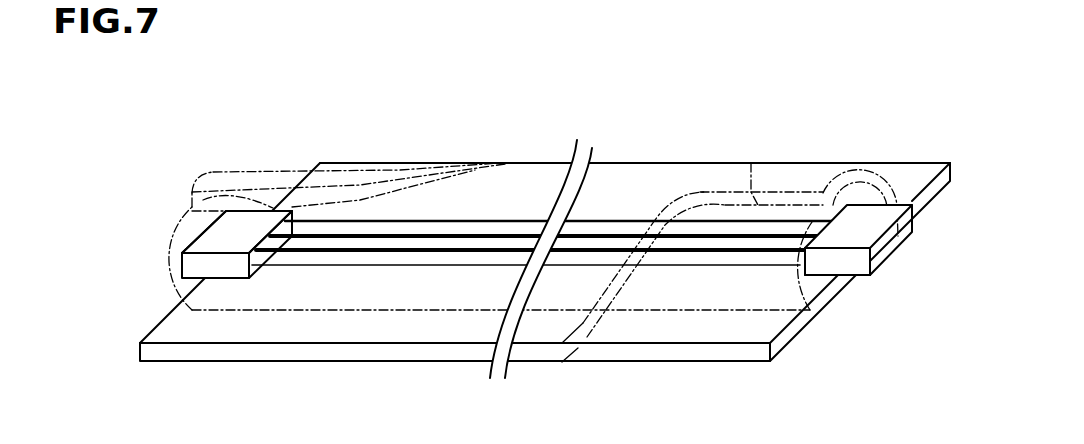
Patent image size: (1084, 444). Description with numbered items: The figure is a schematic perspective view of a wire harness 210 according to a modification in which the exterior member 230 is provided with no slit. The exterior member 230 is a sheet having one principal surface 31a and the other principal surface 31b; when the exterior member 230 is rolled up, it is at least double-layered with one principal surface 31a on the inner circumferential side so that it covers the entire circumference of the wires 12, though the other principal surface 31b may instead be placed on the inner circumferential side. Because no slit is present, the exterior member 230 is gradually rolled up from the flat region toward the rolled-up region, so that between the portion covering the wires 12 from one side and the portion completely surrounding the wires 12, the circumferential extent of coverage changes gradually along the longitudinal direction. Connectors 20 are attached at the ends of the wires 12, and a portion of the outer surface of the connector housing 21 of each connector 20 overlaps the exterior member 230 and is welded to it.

The wire harness 210 is at (247, 115).
The exterior member 230 is at (545, 272).
The one principal surface 31a is at (758, 323).
The other principal surface 31b is at (742, 362).
The wire 12 is at (450, 225).
The connector 20 is at (203, 223).
The connector housing 21 is at (201, 249).